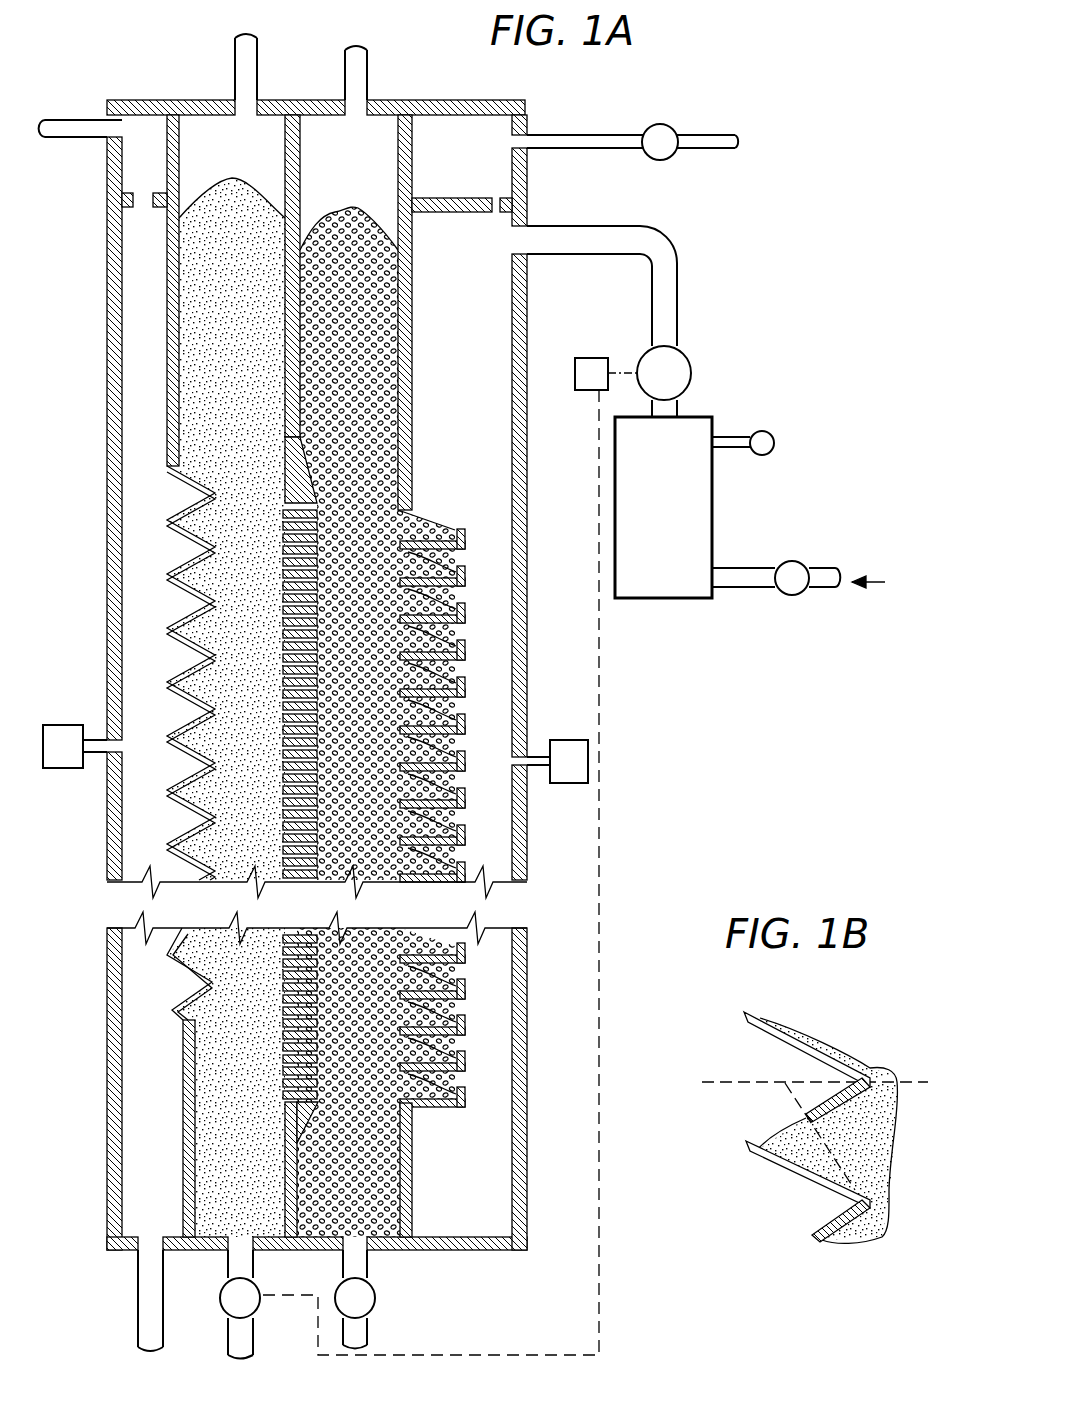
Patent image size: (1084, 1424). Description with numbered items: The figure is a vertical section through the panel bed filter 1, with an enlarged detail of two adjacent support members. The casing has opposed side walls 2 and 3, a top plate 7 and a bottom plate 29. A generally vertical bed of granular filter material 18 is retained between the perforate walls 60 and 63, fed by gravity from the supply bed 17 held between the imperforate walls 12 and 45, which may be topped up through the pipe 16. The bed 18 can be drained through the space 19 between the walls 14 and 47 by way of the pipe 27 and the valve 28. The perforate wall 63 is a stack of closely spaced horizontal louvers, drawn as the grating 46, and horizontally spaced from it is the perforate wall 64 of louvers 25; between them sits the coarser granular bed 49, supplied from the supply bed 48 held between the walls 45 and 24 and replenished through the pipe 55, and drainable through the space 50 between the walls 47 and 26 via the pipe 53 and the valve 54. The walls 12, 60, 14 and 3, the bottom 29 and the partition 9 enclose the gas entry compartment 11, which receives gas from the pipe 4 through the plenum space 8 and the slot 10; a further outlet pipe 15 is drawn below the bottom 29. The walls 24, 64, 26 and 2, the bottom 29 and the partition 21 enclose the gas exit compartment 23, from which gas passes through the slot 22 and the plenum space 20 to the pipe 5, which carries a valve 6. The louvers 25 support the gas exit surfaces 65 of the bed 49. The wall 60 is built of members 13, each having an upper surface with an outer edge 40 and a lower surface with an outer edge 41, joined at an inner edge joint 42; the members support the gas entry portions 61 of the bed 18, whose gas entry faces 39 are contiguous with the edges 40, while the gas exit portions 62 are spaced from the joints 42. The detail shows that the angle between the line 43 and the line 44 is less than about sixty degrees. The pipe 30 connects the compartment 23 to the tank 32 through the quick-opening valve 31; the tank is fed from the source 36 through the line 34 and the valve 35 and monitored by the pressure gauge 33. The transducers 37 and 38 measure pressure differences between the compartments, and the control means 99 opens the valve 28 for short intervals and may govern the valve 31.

In FIG. 1A, the panel bed filter 1 is at (102, 398).
In FIG. 1A, the side wall 2 is at (530, 408).
In FIG. 1A, the side wall 3 is at (107, 518).
In FIG. 1A, the pipe 4 is at (80, 118).
In FIG. 1A, the pipe 5 is at (606, 135).
In FIG. 1A, the valve 6 is at (675, 130).
In FIG. 1A, the top plate 7 is at (150, 100).
In FIG. 1A, the plenum space 8 is at (150, 165).
In FIG. 1A, the partition 9 is at (128, 203).
In FIG. 1A, the slot 10 is at (148, 208).
In FIG. 1A, the gas entry compartment 11 is at (156, 391).
In FIG. 1A, the imperforate wall 12 is at (167, 316).
In FIG. 1A, the member 13 is at (195, 470).
In FIG. 1B, the member 13 is at (776, 1037).
In FIG. 1A, the wall 14 is at (183, 1145).
In FIG. 1A, the outlet pipe 15 is at (138, 1278).
In FIG. 1A, the pipe 16 is at (235, 65).
In FIG. 1A, the supply bed 17 is at (246, 287).
In FIG. 1A, the bed of granular filter material 18 is at (258, 633).
In FIG. 1A, the space 19 is at (248, 1093).
In FIG. 1A, the plenum space 20 is at (476, 155).
In FIG. 1A, the partition 21 is at (446, 205).
In FIG. 1A, the slot 22 is at (498, 226).
In FIG. 1A, the gas exit compartment 23 is at (474, 371).
In FIG. 1A, the imperforate wall 24 is at (412, 292).
In FIG. 1A, the louvers 25 is at (462, 576).
In FIG. 1A, the wall 26 is at (412, 1190).
In FIG. 1A, the pipe 27 is at (255, 1262).
In FIG. 1A, the valve 28 is at (258, 1310).
In FIG. 1A, the bottom plate 29 is at (180, 1250).
In FIG. 1A, the pipe 30 is at (620, 230).
In FIG. 1A, the quick-opening valve 31 is at (692, 374).
In FIG. 1A, the tank 32 is at (713, 478).
In FIG. 1A, the pressure gauge 33 is at (776, 437).
In FIG. 1A, the line 34 is at (738, 566).
In FIG. 1A, the valve 35 is at (802, 562).
In FIG. 1A, the source of gas under pressure 36 is at (862, 584).
In FIG. 1A, the transducer 37 is at (72, 725).
In FIG. 1A, the transducer 38 is at (580, 728).
In FIG. 1A, the gas entry face 39 is at (180, 792).
In FIG. 1B, the gas entry face 39 is at (760, 1128).
In FIG. 1A, the outer edge 40 is at (188, 638).
In FIG. 1B, the outer edge 40 is at (752, 1016).
In FIG. 1A, the outer edge 41 is at (198, 664).
In FIG. 1B, the outer edge 41 is at (806, 1116).
In FIG. 1A, the inner edge joint 42 is at (251, 688).
In FIG. 1B, the inner edge joint 42 is at (880, 1068).
In FIG. 1B, the line 43 is at (880, 1240).
In FIG. 1B, the line 44 is at (918, 1082).
In FIG. 1A, the imperforate wall 45 is at (305, 321).
In FIG. 1A, the perforated grid 46 is at (320, 568).
In FIG. 1A, the wall 47 is at (285, 1188).
In FIG. 1A, the supply bed 48 is at (322, 412).
In FIG. 1A, the granular material bed 49 is at (326, 704).
In FIG. 1A, the space 50 is at (361, 1173).
In FIG. 1A, the pipe 53 is at (367, 1265).
In FIG. 1A, the valve 54 is at (376, 1300).
In FIG. 1A, the pipe 55 is at (345, 74).
In FIG. 1A, the perforate wall 60 is at (190, 812).
In FIG. 1A, the gas entry portions 61 is at (216, 804).
In FIG. 1A, the gas exit portions 62 is at (274, 863).
In FIG. 1A, the perforate wall 63 is at (322, 806).
In FIG. 1A, the perforate wall 64 is at (475, 836).
In FIG. 1A, the gas exit surfaces 65 is at (438, 792).
In FIG. 1A, the control means 99 is at (586, 358).